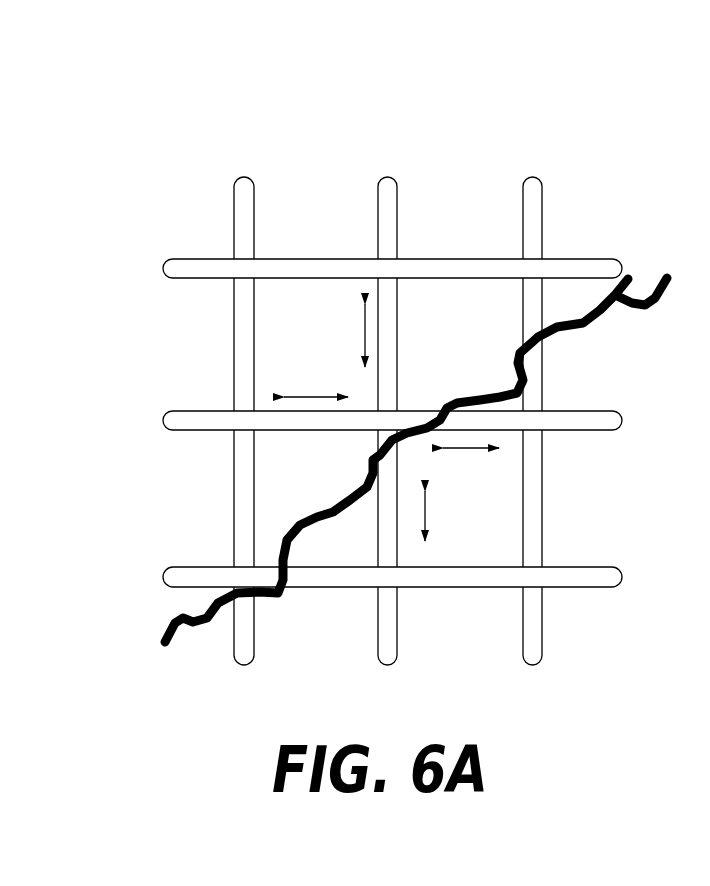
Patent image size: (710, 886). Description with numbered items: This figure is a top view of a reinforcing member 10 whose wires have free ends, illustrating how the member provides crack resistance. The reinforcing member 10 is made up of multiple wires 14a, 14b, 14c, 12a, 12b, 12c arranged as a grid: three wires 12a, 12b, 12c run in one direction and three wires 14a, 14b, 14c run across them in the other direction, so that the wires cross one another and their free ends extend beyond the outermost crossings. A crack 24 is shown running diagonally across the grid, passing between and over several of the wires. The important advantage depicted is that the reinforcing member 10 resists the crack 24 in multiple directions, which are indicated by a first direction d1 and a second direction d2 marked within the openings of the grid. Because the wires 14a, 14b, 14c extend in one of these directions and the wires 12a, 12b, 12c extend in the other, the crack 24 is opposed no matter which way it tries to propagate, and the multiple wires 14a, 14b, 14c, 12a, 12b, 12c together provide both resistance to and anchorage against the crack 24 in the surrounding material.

The reinforcing member 10 is at (208, 137).
The wire 12a is at (233, 648).
The wire 12b is at (390, 365).
The wire 12c is at (537, 298).
The wire 14a is at (178, 567).
The wire 14b is at (510, 420).
The wire 14c is at (268, 258).
The crack 24 is at (333, 515).
The first direction d1 is at (362, 342).
The second direction d2 is at (466, 452).